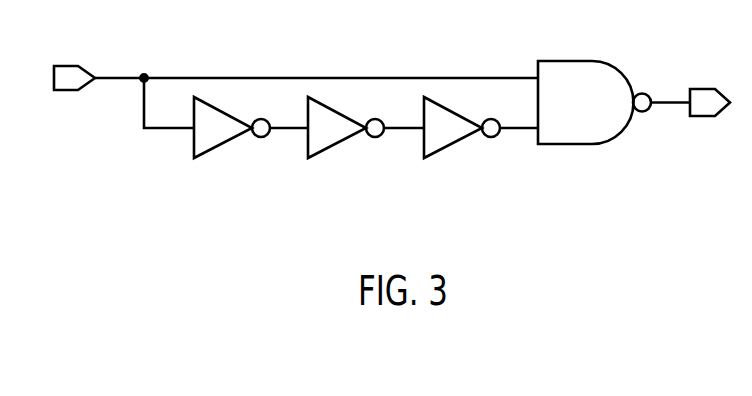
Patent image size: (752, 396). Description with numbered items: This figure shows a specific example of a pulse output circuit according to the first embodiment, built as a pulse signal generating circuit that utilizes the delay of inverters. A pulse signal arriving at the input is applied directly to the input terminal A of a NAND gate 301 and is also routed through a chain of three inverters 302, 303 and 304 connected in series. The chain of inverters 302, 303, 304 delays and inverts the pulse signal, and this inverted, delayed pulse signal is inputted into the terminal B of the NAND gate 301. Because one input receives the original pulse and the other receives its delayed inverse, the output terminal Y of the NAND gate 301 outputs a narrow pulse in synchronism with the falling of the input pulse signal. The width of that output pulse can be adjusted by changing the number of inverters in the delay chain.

The NAND gate 301 is at (580, 61).
The inverter 302 is at (223, 142).
The inverter 303 is at (338, 142).
The inverter 304 is at (453, 142).